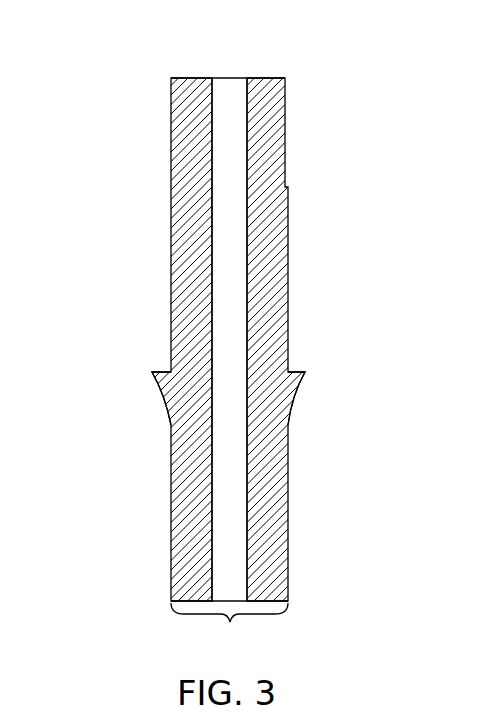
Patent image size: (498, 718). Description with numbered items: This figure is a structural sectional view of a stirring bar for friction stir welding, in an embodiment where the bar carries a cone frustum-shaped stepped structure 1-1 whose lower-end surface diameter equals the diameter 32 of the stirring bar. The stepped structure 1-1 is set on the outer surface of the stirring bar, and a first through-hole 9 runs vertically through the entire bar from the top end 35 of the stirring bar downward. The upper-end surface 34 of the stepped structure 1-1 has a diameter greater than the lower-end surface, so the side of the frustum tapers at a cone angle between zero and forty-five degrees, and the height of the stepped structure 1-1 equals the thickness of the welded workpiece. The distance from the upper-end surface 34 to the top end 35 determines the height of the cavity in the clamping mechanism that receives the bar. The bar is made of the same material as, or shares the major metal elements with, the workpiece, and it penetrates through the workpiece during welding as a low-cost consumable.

The stepped structure 1-1 is at (303, 371).
The top end of the stirring bar 35 is at (282, 77).
The first through-hole 9 is at (227, 235).
The upper-end surface of the stepped structure 34 is at (152, 372).
The diameter of stirring bar 32 is at (232, 622).